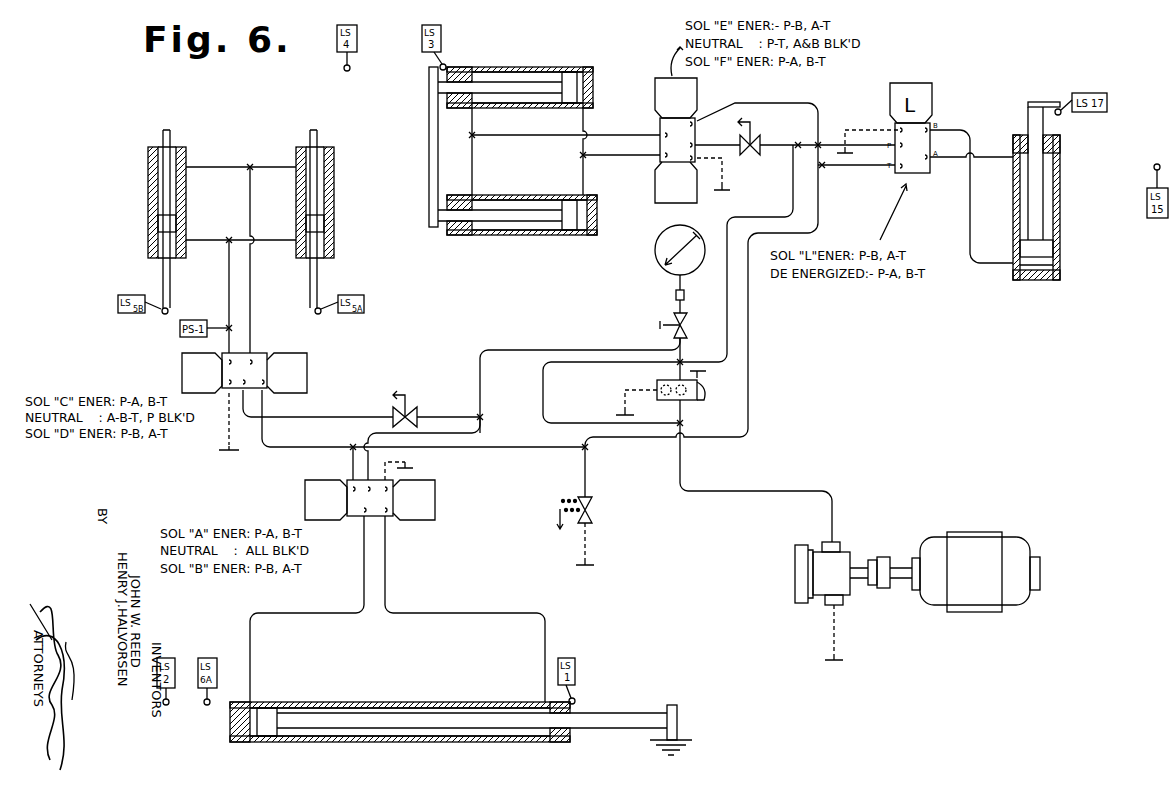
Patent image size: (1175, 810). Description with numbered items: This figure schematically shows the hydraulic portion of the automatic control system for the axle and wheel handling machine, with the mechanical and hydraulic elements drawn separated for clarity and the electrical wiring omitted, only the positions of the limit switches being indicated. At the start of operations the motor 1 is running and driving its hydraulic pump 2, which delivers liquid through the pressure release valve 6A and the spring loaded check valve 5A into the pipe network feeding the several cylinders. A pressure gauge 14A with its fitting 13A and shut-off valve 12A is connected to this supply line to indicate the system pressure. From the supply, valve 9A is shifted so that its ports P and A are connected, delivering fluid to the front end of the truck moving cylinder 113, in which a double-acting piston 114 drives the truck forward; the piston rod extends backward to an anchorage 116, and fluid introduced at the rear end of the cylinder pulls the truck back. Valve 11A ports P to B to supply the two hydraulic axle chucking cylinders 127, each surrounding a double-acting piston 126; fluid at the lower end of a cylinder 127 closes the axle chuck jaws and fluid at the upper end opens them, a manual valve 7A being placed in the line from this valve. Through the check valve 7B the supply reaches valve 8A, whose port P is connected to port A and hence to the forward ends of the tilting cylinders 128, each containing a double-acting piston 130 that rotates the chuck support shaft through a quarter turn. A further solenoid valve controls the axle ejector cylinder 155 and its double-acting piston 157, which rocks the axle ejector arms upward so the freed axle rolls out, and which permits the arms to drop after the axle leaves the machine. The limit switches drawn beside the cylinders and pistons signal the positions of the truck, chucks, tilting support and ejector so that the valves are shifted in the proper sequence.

The motor 1 is at (985, 540).
The hydraulic pump 2 is at (840, 560).
The spring loaded check valve 5A is at (590, 512).
The pressure release valve 6A is at (697, 397).
The valve 7A is at (405, 417).
The check valve 7B is at (750, 145).
The valve 8A is at (697, 100).
The valve 9A is at (435, 490).
The valve 11A is at (307, 357).
The valve 12A is at (675, 318).
The gauge fitting 13A is at (676, 295).
The pressure gauge 14A is at (660, 238).
The truck moving cylinder 113 is at (497, 705).
The double-acting piston 114 is at (270, 712).
The anchorage 116 is at (677, 718).
The double-acting piston 126 is at (172, 226).
The hydraulic axle chucking cylinder 127 is at (186, 195).
The tilting cylinders 128 is at (490, 67).
The double-acting piston 130 is at (568, 78).
The axle ejector cylinder 155 is at (1060, 170).
The double-acting piston 157 is at (1043, 248).